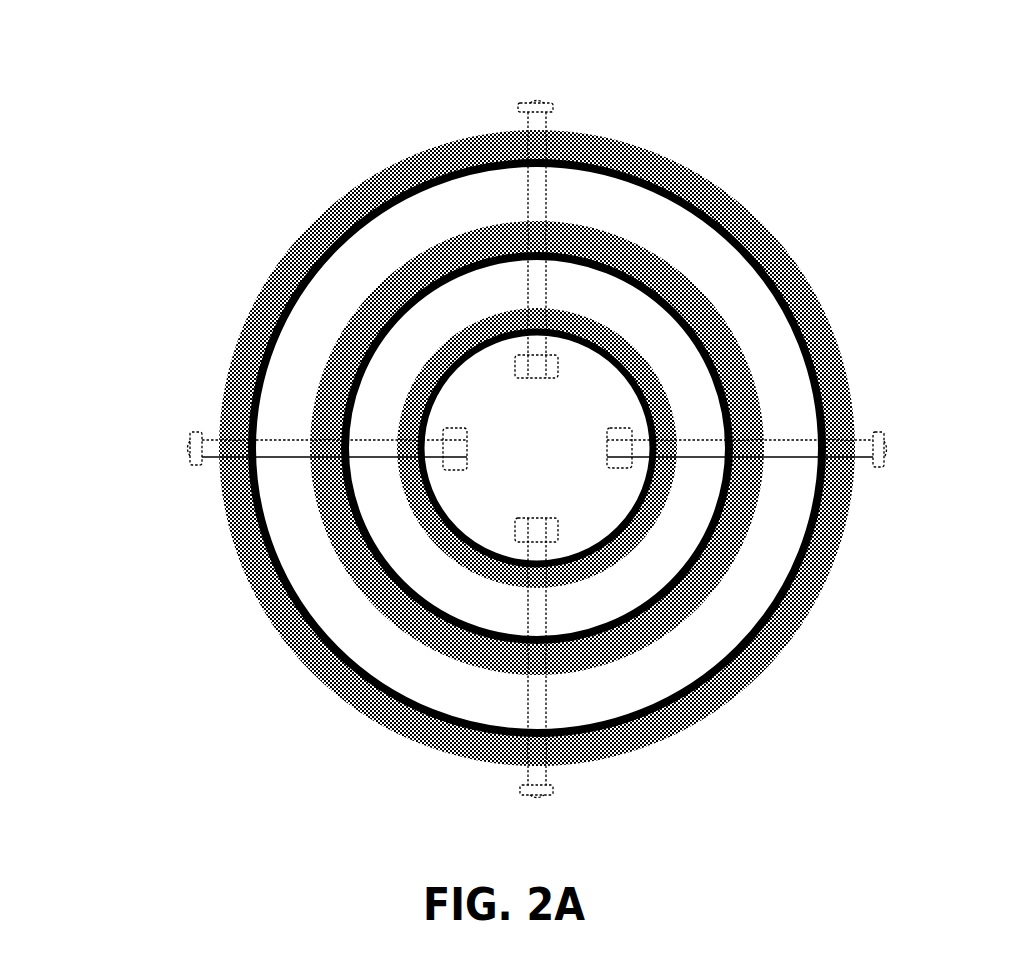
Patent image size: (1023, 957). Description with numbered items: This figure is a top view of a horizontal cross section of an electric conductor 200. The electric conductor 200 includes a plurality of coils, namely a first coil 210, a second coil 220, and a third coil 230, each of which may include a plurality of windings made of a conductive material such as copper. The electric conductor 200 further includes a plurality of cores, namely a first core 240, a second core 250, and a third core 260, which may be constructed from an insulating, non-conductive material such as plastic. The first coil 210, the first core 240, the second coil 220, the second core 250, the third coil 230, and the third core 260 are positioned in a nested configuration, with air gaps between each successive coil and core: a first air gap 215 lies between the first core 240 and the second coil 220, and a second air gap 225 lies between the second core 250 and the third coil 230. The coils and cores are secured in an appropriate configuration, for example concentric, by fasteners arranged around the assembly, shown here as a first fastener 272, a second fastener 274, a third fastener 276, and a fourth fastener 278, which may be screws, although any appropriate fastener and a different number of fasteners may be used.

The electric conductor 200 is at (822, 82).
The first coil 210 is at (541, 157).
The first air gap 215 is at (480, 197).
The second coil 220 is at (750, 448).
The second air gap 225 is at (382, 528).
The third coil 230 is at (405, 445).
The first core 240 is at (544, 156).
The second core 250 is at (735, 442).
The third core 260 is at (408, 450).
The first fastener 272 is at (540, 102).
The second fastener 274 is at (885, 433).
The third fastener 276 is at (525, 793).
The fourth fastener 278 is at (192, 437).